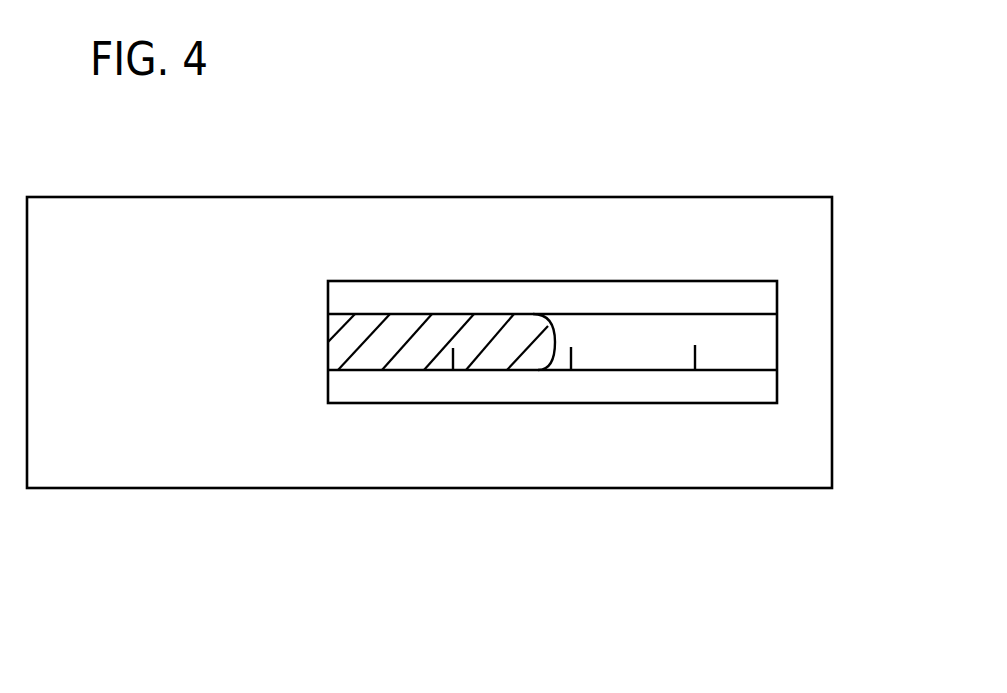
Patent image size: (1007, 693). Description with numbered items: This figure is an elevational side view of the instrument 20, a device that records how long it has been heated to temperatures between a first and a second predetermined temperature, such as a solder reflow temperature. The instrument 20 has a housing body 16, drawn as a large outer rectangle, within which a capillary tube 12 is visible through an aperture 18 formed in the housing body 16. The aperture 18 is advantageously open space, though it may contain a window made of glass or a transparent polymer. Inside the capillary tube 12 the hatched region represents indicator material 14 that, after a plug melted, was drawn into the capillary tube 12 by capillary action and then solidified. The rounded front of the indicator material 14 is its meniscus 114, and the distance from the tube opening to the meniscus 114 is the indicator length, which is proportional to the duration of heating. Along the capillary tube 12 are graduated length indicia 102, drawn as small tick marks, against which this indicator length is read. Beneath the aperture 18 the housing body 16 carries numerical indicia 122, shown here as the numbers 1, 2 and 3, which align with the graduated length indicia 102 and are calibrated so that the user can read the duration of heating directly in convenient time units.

The instrument 20 is at (442, 654).
The housing body 16 is at (540, 222).
The aperture 18 is at (738, 281).
The capillary tube 12 is at (764, 337).
The indicator material 14 is at (371, 360).
The meniscus 114 is at (555, 345).
The numerical indicia 122 is at (558, 423).
The graduated length indicia 102 is at (690, 358).
The first position 1 is at (457, 396).
The second position 2 is at (571, 395).
The third position 3 is at (695, 396).